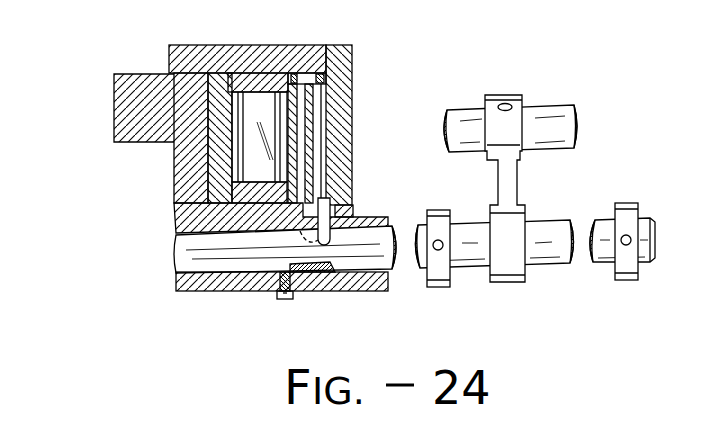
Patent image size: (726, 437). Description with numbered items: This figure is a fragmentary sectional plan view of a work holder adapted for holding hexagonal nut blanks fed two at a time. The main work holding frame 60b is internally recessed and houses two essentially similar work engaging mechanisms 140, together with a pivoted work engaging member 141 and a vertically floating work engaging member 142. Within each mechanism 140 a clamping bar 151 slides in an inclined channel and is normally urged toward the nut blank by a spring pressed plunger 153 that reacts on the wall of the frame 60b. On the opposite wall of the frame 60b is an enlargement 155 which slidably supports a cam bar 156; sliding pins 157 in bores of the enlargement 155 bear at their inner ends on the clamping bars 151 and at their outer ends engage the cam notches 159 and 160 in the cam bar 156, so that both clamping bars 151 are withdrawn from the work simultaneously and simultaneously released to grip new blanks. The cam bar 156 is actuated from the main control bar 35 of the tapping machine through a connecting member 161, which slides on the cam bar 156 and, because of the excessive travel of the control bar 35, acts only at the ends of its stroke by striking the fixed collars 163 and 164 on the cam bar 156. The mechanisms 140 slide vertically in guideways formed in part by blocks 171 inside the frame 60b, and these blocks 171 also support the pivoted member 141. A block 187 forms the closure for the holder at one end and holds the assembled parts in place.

The main work holding frame 60b is at (251, 49).
The blocks 171 is at (256, 72).
The spring pressed plungers 153 is at (330, 76).
The mechanisms 140 is at (329, 94).
The clamping bar 151 is at (318, 123).
The pivoted work engaging member 141 is at (259, 147).
The block 187 is at (112, 101).
The vertically floating work engaging member 142 is at (208, 164).
The enlargement 155 is at (190, 219).
The cam bar 156 is at (186, 257).
The sliding pins 157 is at (330, 214).
The cam notch 159 is at (333, 239).
The cam notch 160 is at (298, 236).
The main control bar 35 is at (574, 88).
The connecting member 161 is at (508, 183).
The fixed collar 163 is at (450, 283).
The fixed collar 164 is at (622, 277).